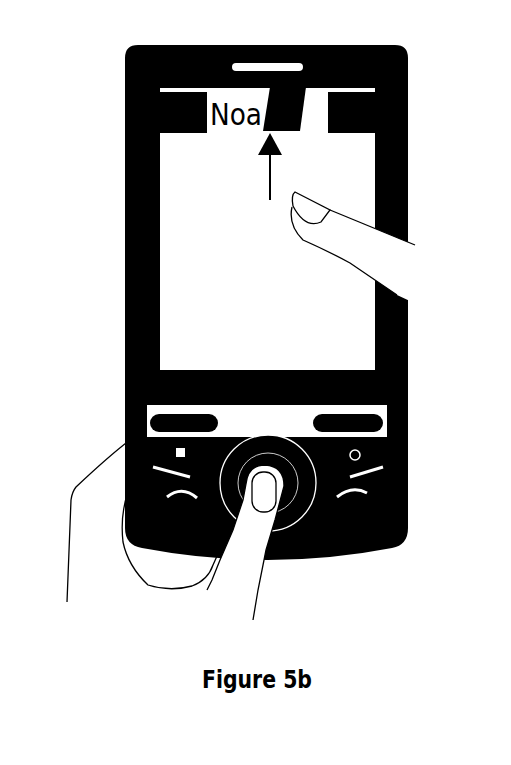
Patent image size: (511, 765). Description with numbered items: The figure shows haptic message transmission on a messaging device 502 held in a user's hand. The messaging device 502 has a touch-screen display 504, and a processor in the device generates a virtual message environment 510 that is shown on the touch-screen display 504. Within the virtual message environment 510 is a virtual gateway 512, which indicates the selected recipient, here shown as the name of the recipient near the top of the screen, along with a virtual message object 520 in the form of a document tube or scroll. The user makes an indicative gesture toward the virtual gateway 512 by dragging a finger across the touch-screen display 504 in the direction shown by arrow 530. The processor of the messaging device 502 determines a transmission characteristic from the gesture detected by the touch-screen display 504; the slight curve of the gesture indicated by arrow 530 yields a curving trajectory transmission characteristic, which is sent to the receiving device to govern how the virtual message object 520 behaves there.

The messaging device 502 is at (140, 73).
The touch-screen display 504 is at (147, 120).
The virtual message environment 510 is at (218, 245).
The virtual gateway 512 is at (350, 117).
The virtual message object 520 is at (302, 125).
The arrow 530 is at (252, 166).